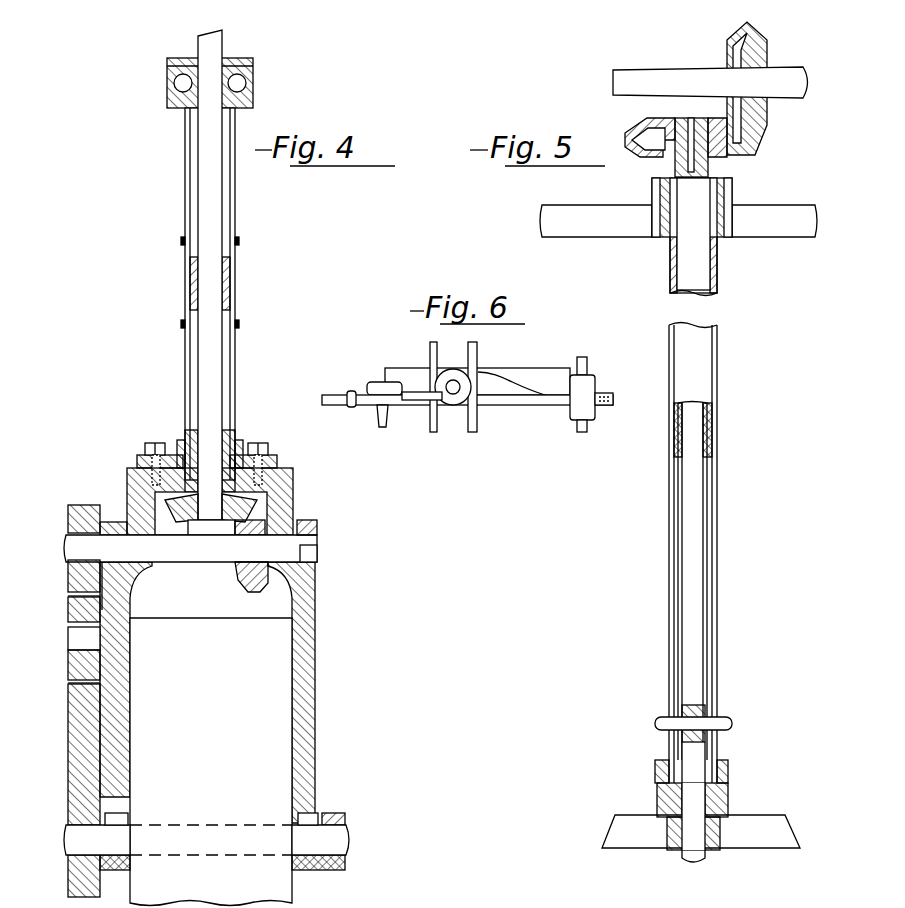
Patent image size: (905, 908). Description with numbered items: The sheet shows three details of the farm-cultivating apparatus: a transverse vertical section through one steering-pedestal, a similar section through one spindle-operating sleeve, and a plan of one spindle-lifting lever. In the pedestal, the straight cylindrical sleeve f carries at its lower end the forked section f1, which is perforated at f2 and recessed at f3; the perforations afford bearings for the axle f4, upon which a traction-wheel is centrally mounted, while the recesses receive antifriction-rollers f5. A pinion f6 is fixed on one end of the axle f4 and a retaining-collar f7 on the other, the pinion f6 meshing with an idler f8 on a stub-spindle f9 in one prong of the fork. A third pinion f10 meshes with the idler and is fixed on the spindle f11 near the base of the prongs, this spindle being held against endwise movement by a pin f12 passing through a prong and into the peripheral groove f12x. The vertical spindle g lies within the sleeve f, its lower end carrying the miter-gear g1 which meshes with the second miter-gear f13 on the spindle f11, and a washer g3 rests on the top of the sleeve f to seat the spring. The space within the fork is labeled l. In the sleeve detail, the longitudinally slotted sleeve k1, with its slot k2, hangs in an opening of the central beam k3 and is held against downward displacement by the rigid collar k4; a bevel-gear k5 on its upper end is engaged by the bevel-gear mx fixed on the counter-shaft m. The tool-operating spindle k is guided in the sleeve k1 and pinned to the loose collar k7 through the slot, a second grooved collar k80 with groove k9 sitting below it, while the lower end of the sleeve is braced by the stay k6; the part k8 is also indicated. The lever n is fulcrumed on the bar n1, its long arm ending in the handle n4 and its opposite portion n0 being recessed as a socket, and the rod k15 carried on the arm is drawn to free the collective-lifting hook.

In FIG. 4, the washer g3 is at (252, 73).
In FIG. 4, the sleeve f is at (236, 192).
In FIG. 4, the vertical spindle g is at (210, 275).
In FIG. 4, the miter-gear g1 is at (190, 522).
In FIG. 4, the spindle f11 is at (206, 562).
In FIG. 4, the pin f12 is at (317, 530).
In FIG. 4, the peripheral groove f12x is at (317, 556).
In FIG. 4, the second miter-gear f13 is at (262, 592).
In FIG. 4, the forked section f1 is at (318, 640).
In FIG. 4, the third pinion f10 is at (66, 560).
In FIG. 4, the stub-spindle f9 is at (70, 637).
In FIG. 4, the idler f8 is at (70, 666).
In FIG. 4, the pinion f6 is at (75, 760).
In FIG. 4, the perforation f2 is at (83, 861).
In FIG. 4, the cylinder l is at (211, 762).
In FIG. 4, the antifriction-roller f5 is at (130, 822).
In FIG. 4, the axle f4 is at (97, 840).
In FIG. 4, the retaining-collar f7 is at (350, 862).
In FIG. 4, the recess f3 is at (118, 812).
In FIG. 5, the bevel-gear mx is at (748, 57).
In FIG. 5, the counter-shaft m is at (710, 82).
In FIG. 5, the bevel-gear k5 is at (650, 140).
In FIG. 5, the beam k3 is at (732, 218).
In FIG. 5, the rigid collar k4 is at (657, 200).
In FIG. 5, the sleeve k1 is at (715, 373).
In FIG. 5, the longitudinal slot k2 is at (718, 662).
In FIG. 5, the tool-operating spindle k is at (693, 706).
In FIG. 6, the tool-operating spindle k is at (458, 382).
In FIG. 5, the plug k8 is at (728, 732).
In FIG. 5, the collar k7 is at (726, 716).
In FIG. 5, the collar k80 is at (730, 772).
In FIG. 5, the stay k6 is at (701, 831).
In FIG. 5, the peripheral groove k9 is at (662, 780).
In FIG. 6, the spindle-lifting lever n is at (530, 400).
In FIG. 6, the rod k15 is at (420, 402).
In FIG. 6, the handle n4 is at (345, 412).
In FIG. 6, the bar n1 is at (592, 395).
In FIG. 6, the socket portion n0 is at (604, 394).